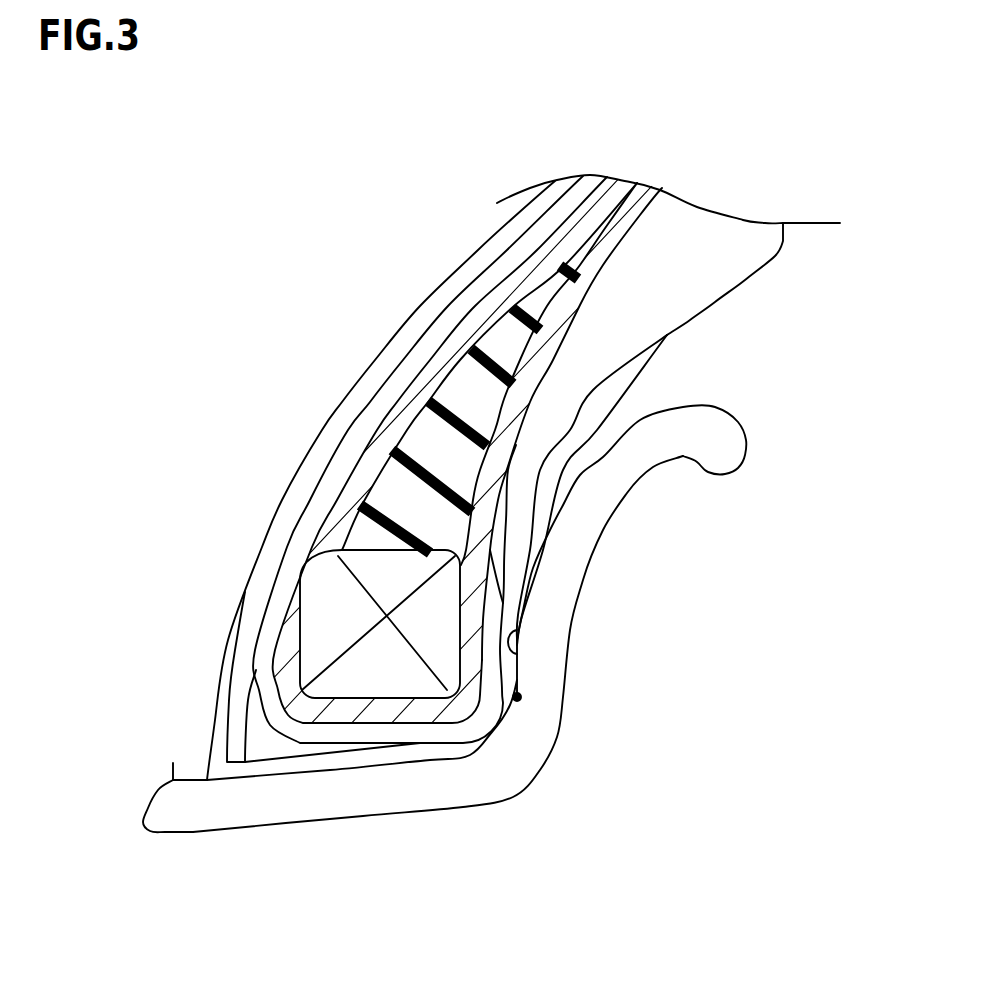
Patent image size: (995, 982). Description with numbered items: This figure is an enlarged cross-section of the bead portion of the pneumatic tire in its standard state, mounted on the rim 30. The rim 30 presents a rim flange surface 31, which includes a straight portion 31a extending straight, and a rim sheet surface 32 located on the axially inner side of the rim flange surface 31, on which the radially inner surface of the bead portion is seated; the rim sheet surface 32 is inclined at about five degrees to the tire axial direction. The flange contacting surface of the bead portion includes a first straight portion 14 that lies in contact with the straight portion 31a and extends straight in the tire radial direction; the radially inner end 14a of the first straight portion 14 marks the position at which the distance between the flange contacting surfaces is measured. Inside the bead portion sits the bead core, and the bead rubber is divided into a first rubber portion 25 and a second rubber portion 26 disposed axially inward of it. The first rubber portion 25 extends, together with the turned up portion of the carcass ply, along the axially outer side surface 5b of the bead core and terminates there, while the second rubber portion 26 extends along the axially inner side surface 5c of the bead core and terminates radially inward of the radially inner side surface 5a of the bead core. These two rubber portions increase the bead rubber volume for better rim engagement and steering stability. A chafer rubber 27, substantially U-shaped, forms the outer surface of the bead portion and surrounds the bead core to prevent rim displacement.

The inner side surface in the tire radial direction of the bead core 5a is at (400, 700).
The outer side surface in the tire axial direction of the bead core 5b is at (463, 650).
The inner side surface in the tire axial direction of the bead core 5c is at (305, 607).
The first straight portion 14 is at (520, 677).
The radially inner end of the first straight portion 14a is at (521, 697).
The first rubber portion 25 is at (337, 475).
The second rubber portion 26 is at (280, 538).
The chafer rubber 27 is at (210, 683).
The rim 30 is at (745, 494).
The rim flange surface 31 is at (645, 628).
The straight portion 31a is at (522, 627).
The rim sheet surface 32 is at (333, 767).